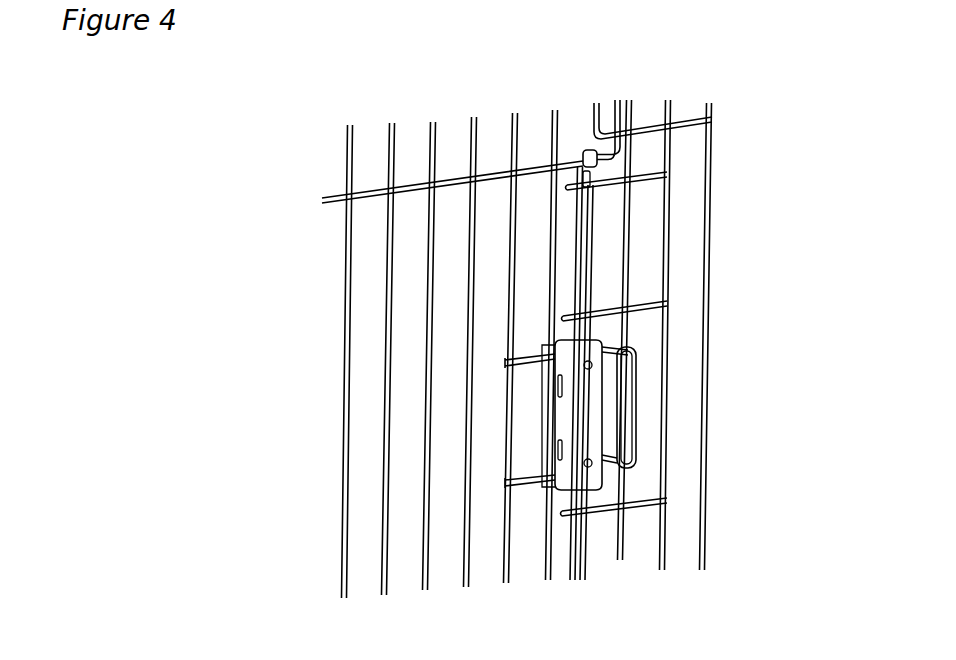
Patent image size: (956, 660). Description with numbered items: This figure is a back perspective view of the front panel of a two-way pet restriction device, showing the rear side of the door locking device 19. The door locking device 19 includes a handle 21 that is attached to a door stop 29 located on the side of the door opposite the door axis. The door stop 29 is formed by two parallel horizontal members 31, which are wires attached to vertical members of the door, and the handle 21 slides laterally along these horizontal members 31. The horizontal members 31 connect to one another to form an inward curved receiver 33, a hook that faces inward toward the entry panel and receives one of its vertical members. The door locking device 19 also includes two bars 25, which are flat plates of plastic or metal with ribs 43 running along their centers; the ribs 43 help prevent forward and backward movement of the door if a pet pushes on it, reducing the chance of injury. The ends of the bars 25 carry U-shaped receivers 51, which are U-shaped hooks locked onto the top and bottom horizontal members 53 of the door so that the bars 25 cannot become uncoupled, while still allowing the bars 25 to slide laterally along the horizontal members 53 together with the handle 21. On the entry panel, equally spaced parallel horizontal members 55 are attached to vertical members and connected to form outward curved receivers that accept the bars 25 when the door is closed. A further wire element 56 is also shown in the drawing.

The door locking device 19 is at (520, 430).
The handle 21 is at (605, 455).
The bars 25 is at (590, 265).
The door stop 29 is at (650, 372).
The horizontal members 31 is at (535, 357).
The inward curved receiver 33 is at (636, 413).
The ribs 43 is at (573, 216).
The U-shaped receivers 51 is at (605, 165).
The horizontal members 53 is at (378, 191).
The horizontal members 55 is at (640, 184).
The horizontal frame wire 56 is at (660, 307).